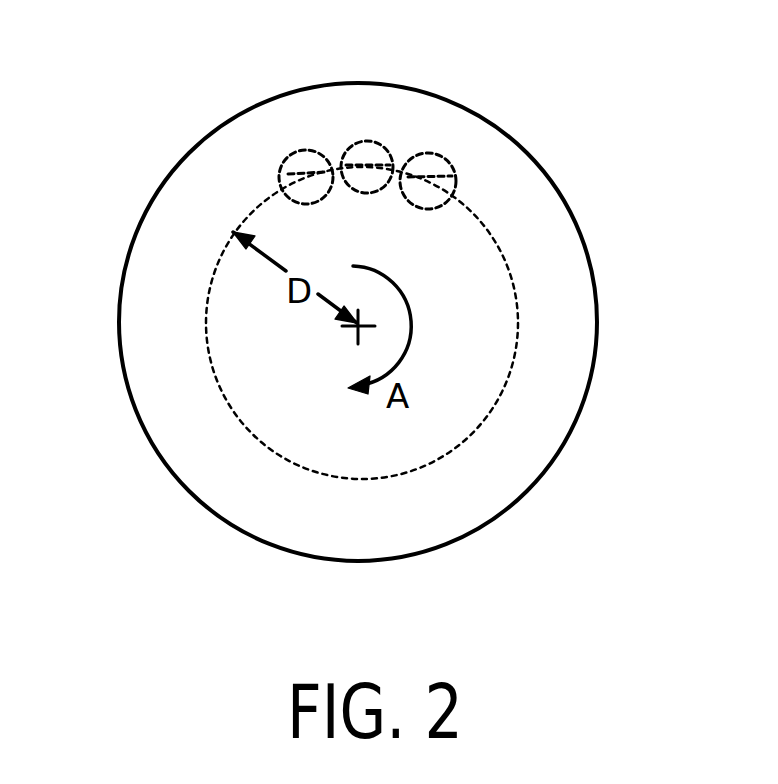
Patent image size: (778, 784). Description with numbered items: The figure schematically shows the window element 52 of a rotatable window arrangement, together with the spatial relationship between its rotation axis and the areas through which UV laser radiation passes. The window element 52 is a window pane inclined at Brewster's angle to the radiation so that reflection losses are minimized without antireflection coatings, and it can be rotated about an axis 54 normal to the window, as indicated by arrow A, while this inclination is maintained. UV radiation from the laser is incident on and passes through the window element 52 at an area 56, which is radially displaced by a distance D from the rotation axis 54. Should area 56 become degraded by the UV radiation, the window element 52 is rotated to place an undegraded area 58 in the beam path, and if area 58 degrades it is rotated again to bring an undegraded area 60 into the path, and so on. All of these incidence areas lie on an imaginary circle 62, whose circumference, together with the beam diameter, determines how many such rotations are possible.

The window element 52 is at (528, 404).
The rotation axis 54 is at (348, 340).
The area 56 is at (443, 157).
The undegraded area 58 is at (377, 138).
The undegraded area 60 is at (313, 150).
The imaginary circle 62 is at (507, 263).